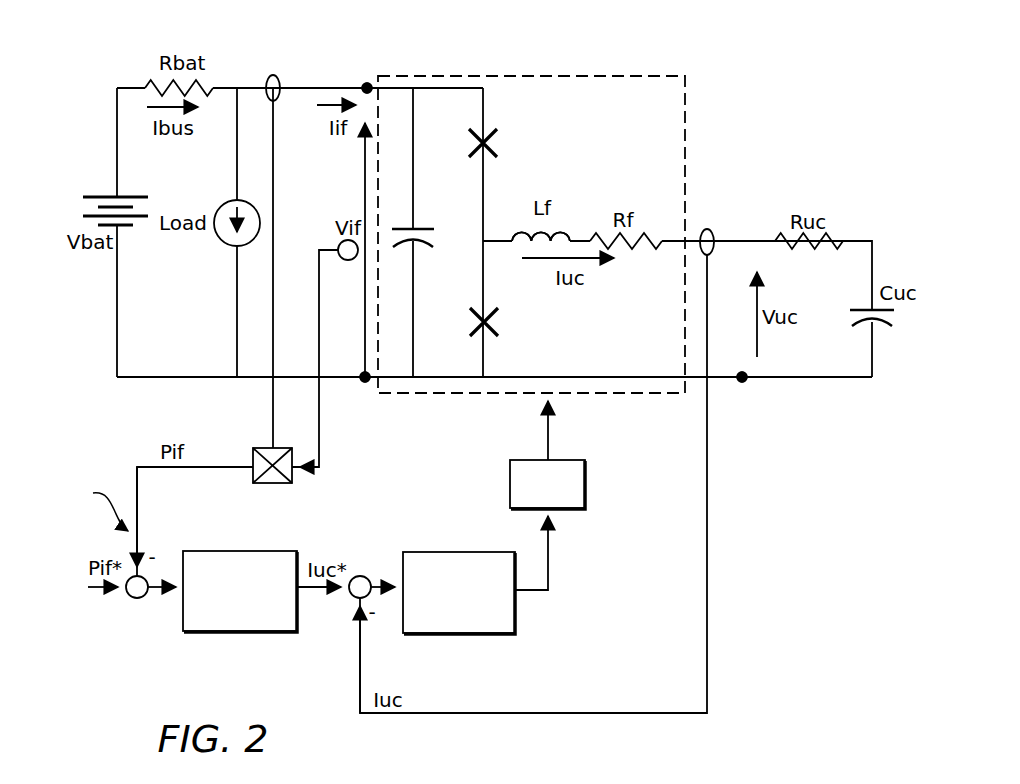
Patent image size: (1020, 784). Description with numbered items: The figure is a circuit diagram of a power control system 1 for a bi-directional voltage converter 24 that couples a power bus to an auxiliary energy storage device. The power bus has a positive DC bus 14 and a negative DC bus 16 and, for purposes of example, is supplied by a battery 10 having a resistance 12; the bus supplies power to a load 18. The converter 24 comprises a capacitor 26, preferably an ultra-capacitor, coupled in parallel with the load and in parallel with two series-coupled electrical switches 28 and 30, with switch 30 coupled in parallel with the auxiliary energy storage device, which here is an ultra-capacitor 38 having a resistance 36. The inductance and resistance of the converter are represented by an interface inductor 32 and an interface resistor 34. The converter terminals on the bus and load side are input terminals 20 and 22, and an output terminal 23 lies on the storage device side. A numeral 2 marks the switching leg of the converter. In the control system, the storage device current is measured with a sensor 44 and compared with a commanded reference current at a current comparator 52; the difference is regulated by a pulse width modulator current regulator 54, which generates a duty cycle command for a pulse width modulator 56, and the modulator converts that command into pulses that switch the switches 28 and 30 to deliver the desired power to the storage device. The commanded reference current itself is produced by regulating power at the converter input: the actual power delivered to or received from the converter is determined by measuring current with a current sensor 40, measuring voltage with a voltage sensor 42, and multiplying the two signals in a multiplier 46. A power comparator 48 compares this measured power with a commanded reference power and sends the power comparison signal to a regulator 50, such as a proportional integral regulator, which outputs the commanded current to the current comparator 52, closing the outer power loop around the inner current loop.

The power control system 1 is at (97, 506).
The converter switching leg 2 is at (510, 232).
The battery 10 is at (103, 197).
The resistance 12 is at (147, 82).
The positive DC bus 14 is at (230, 83).
The negative DC bus 16 is at (188, 375).
The load 18 is at (233, 245).
The input terminal 20 is at (363, 85).
The input terminal 22 is at (365, 383).
The output terminal 23 is at (747, 378).
The bi-directional voltage converter 24 is at (593, 75).
The capacitor 26 is at (427, 227).
The electrical switch 28 is at (493, 137).
The electrical switch 30 is at (492, 325).
The interface inductor 32 is at (563, 223).
The interface resistor 34 is at (650, 240).
The resistance 36 is at (840, 240).
The ultra-capacitor 38 is at (855, 310).
The current sensor 40 is at (273, 75).
The voltage sensor 42 is at (352, 262).
The sensor 44 is at (712, 233).
The multiplier 46 is at (253, 480).
The power comparator 48 is at (132, 602).
The regulator 50 is at (277, 551).
The current comparator 52 is at (353, 603).
The PWM current regulator 54 is at (440, 552).
The PWM 56 is at (587, 468).